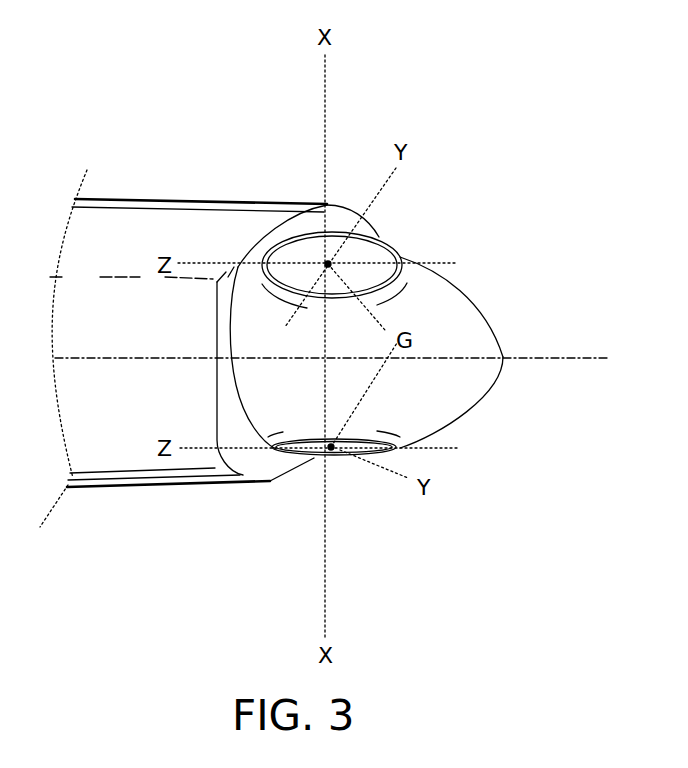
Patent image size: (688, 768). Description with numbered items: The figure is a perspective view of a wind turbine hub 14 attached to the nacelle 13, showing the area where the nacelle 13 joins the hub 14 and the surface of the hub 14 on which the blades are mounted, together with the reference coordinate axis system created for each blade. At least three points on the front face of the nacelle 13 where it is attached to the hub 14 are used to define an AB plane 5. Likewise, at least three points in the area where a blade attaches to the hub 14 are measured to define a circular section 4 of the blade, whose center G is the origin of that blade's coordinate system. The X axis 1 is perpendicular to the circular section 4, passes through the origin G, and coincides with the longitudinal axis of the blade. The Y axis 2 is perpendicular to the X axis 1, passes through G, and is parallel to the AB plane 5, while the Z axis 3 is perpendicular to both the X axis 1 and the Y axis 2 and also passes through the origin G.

The X axis 1 is at (325, 117).
The Y axis 2 is at (378, 194).
The Z axis 3 is at (437, 263).
The circular section 4 is at (382, 247).
The AB plane 5 is at (267, 487).
The nacelle 13 is at (113, 448).
The hub 14 is at (458, 377).